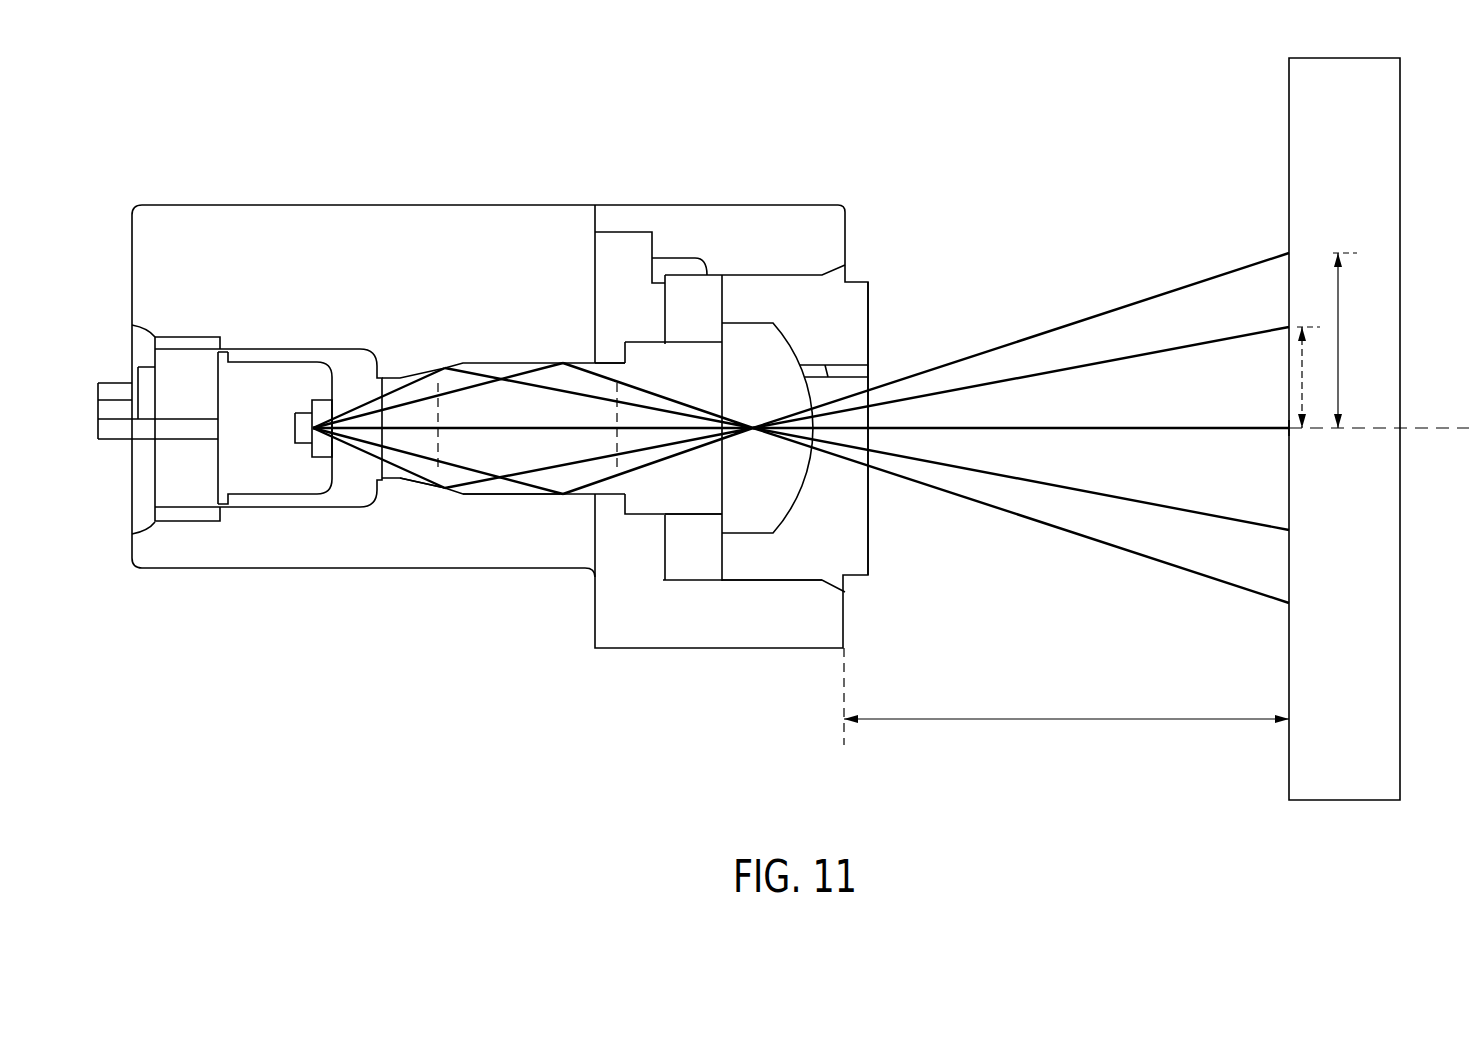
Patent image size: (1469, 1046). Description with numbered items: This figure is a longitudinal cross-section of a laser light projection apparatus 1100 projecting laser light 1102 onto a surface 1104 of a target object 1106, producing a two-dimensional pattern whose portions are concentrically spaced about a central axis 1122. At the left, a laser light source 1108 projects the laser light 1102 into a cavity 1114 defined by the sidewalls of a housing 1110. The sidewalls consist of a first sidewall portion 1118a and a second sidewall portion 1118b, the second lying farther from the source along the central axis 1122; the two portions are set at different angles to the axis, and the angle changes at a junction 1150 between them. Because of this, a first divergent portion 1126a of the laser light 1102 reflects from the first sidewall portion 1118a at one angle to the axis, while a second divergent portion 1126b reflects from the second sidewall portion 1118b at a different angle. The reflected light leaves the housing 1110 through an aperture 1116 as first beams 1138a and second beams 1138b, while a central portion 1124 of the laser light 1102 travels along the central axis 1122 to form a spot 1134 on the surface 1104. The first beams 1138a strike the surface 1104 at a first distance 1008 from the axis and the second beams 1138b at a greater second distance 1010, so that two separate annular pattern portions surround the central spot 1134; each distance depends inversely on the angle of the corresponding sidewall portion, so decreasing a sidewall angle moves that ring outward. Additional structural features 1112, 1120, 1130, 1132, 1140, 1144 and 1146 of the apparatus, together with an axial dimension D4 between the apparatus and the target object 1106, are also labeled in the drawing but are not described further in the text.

The laser light projection apparatus 1100 is at (333, 60).
The laser light 1102 is at (1117, 562).
The surface 1104 is at (1288, 584).
The target object 1106 is at (1275, 783).
The laser light source 1108 is at (272, 470).
The housing 1110 is at (512, 583).
The second lens 1112 is at (780, 348).
The cavity 1114 is at (599, 368).
The aperture 1116 is at (847, 387).
The first sidewall portion 1118a is at (408, 483).
The second sidewall portion 1118b is at (520, 497).
The light source housing 1120 is at (345, 492).
The central axis 1122 is at (1423, 433).
The central portion 1124 is at (1117, 428).
The first divergent portion 1126a is at (401, 378).
The second divergent portion 1126b is at (517, 373).
The lens bore 1130 is at (617, 368).
The housing wall 1132 is at (880, 317).
The spot 1134 is at (1297, 431).
The first beams 1138a is at (1182, 342).
The second beams 1138b is at (1073, 318).
The lens cavity 1140 is at (800, 550).
The housing recess 1144 is at (693, 562).
The air gap 1146 is at (702, 490).
The junction 1150 is at (482, 497).
The second distance 1010 is at (1340, 317).
The first distance 1008 is at (1302, 383).
The distance to target D4 is at (1067, 721).